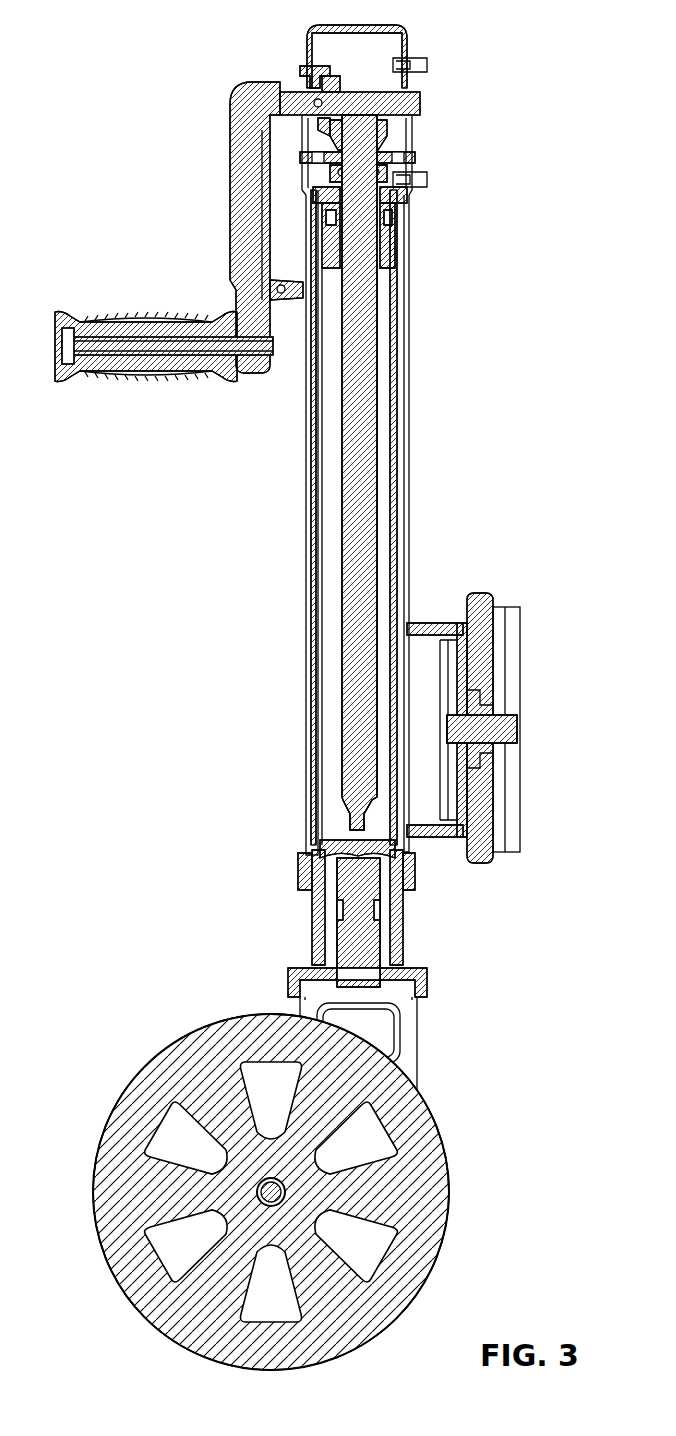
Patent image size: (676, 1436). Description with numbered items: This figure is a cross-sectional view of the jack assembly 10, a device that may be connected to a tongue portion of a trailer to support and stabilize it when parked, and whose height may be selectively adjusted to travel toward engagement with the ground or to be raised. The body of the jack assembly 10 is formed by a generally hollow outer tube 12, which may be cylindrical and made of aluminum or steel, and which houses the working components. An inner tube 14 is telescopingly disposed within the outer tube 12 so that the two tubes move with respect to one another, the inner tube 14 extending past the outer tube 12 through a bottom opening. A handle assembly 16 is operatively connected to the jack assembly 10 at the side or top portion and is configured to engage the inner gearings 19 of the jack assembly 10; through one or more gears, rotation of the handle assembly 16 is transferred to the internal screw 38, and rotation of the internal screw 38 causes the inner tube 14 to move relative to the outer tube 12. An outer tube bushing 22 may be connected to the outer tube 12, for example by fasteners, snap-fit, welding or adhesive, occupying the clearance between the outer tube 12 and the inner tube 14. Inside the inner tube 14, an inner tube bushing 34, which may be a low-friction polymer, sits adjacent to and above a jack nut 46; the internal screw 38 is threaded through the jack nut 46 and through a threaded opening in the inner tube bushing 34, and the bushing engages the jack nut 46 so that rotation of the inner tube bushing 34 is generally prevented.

The jack assembly 10 is at (146, 36).
The outer tube 12 is at (407, 298).
The inner tube 14 is at (393, 338).
The handle assembly 16 is at (208, 276).
The inner gearings 19 is at (426, 123).
The outer tube bushing 22 is at (415, 873).
The inner tube bushing 34 is at (393, 197).
The internal screw 38 is at (357, 447).
The jack nut 46 is at (378, 242).